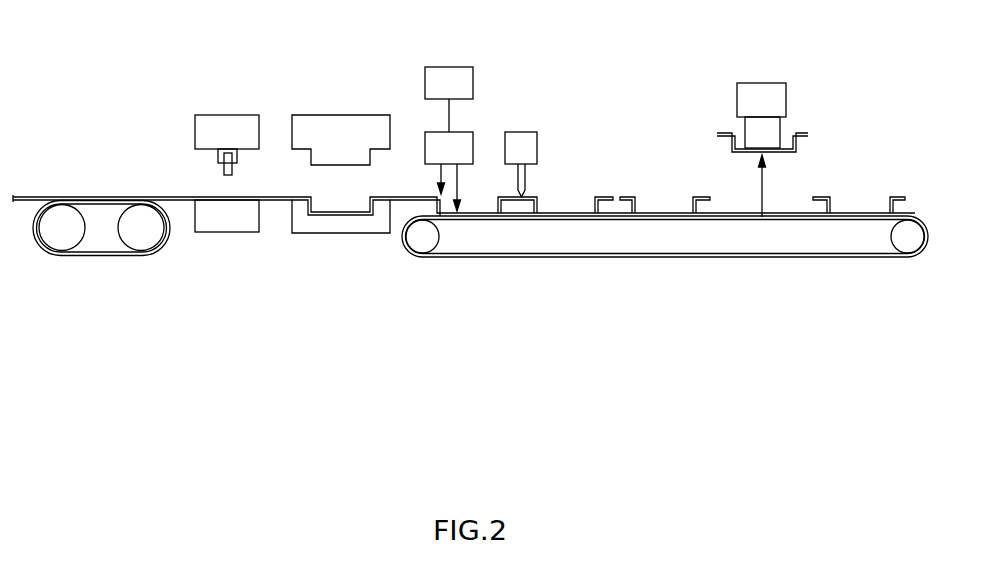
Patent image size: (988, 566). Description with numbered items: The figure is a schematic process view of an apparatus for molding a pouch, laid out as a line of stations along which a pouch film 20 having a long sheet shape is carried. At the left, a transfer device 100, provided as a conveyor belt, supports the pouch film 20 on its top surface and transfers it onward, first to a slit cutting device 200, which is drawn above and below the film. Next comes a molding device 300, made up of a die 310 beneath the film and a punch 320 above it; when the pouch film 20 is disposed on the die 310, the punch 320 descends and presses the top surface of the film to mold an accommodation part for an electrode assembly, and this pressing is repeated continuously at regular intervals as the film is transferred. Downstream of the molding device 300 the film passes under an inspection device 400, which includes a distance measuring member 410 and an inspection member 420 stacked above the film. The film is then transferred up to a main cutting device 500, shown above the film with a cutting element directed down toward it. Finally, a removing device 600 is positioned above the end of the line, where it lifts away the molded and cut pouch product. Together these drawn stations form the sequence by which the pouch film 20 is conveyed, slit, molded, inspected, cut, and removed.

The pouch film 20 is at (37, 197).
The transfer device 100 is at (102, 257).
The slit cutting device 200 is at (228, 115).
The molding device 300 is at (365, 235).
The die 310 is at (340, 235).
The punch 320 is at (342, 115).
The inspection device 400 is at (506, 137).
The distance measuring member 410 is at (473, 148).
The inspection member 420 is at (473, 83).
The main cutting device 500 is at (537, 147).
The removing device 600 is at (762, 83).